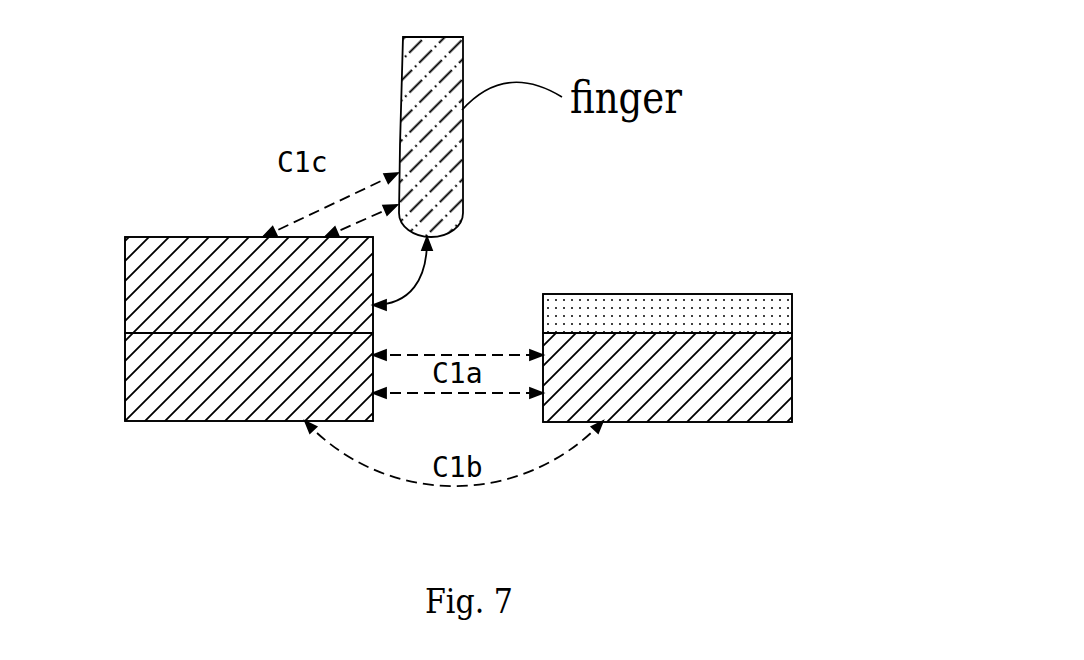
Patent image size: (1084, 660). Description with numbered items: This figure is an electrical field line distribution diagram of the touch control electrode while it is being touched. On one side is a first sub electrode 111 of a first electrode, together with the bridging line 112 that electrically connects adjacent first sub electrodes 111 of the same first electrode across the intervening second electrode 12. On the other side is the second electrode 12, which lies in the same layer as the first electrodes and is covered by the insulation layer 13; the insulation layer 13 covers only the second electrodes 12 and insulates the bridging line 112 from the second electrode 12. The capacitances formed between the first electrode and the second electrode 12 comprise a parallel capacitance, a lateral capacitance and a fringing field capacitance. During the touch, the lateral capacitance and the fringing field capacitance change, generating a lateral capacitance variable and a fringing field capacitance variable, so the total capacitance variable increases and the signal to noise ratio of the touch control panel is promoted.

The first sub electrode 111 is at (195, 383).
The bridging line 112 is at (187, 273).
The second electrode 12 is at (755, 393).
The insulation layer 13 is at (733, 309).